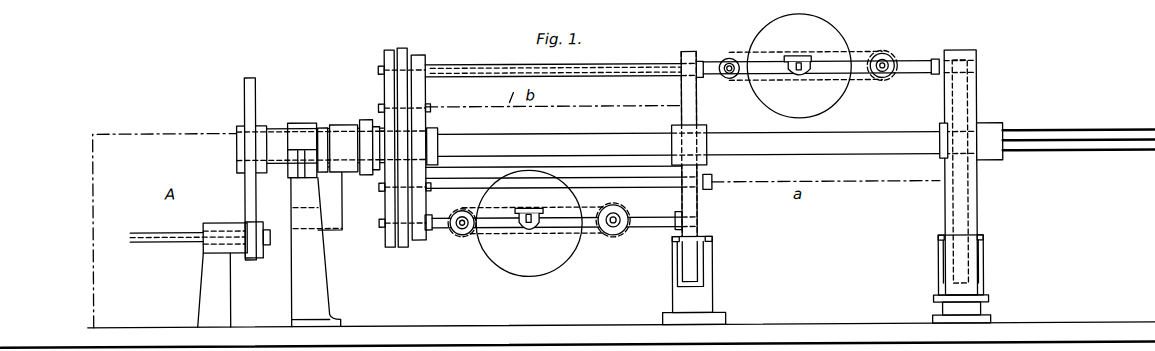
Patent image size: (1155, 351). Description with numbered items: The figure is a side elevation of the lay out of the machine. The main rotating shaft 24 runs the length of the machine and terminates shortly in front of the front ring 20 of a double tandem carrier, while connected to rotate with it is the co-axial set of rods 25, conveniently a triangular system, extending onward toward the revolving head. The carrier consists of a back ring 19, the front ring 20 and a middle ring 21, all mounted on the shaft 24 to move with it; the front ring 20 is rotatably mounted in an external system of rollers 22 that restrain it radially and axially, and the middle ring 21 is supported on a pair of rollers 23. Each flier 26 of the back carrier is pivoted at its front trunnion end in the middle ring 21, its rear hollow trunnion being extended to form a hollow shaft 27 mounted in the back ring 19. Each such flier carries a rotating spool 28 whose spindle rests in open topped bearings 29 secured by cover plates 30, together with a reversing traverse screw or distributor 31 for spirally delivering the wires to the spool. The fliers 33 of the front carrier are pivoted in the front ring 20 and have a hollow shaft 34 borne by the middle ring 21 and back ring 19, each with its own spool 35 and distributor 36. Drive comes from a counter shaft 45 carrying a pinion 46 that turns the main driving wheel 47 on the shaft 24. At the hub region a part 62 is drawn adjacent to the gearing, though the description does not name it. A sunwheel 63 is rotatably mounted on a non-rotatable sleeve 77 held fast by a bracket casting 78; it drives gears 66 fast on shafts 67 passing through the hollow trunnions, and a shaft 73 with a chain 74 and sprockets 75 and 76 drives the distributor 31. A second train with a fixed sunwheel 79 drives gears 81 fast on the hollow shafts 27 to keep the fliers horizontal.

The back ring 19 is at (437, 74).
The front ring 20 is at (970, 190).
The middle ring 21 is at (699, 117).
The external system of rollers 22 is at (975, 83).
The pair of rollers 23 is at (704, 233).
The main rotating shaft 24 is at (273, 128).
The co-axial set of rods 25 is at (1078, 152).
The flier 26 is at (636, 218).
The hollow shaft 27 is at (433, 214).
The spool 28 is at (492, 256).
The open topped bearings 29 is at (790, 78).
The cover plates 30 is at (795, 57).
The distributor 31 is at (612, 230).
The flier 33 is at (825, 62).
The hollow shaft 34 is at (650, 78).
The spool 35 is at (836, 107).
The distributor 36 is at (893, 62).
The counter shaft 45 is at (160, 242).
The pinion 46 is at (252, 260).
The main driving wheel 47 is at (244, 188).
The hub 62 is at (389, 162).
The sunwheel 63 is at (392, 190).
The gears 66 is at (388, 54).
The shafts 67 is at (405, 48).
The shaft 73 is at (725, 80).
The chain 74 is at (470, 205).
The sprocket 75 is at (734, 85).
The sprocket 76 is at (892, 74).
The sleeve 77 is at (366, 117).
The bracket casting 78 is at (347, 123).
The sunwheel 79 is at (436, 144).
The gears 81 is at (426, 66).